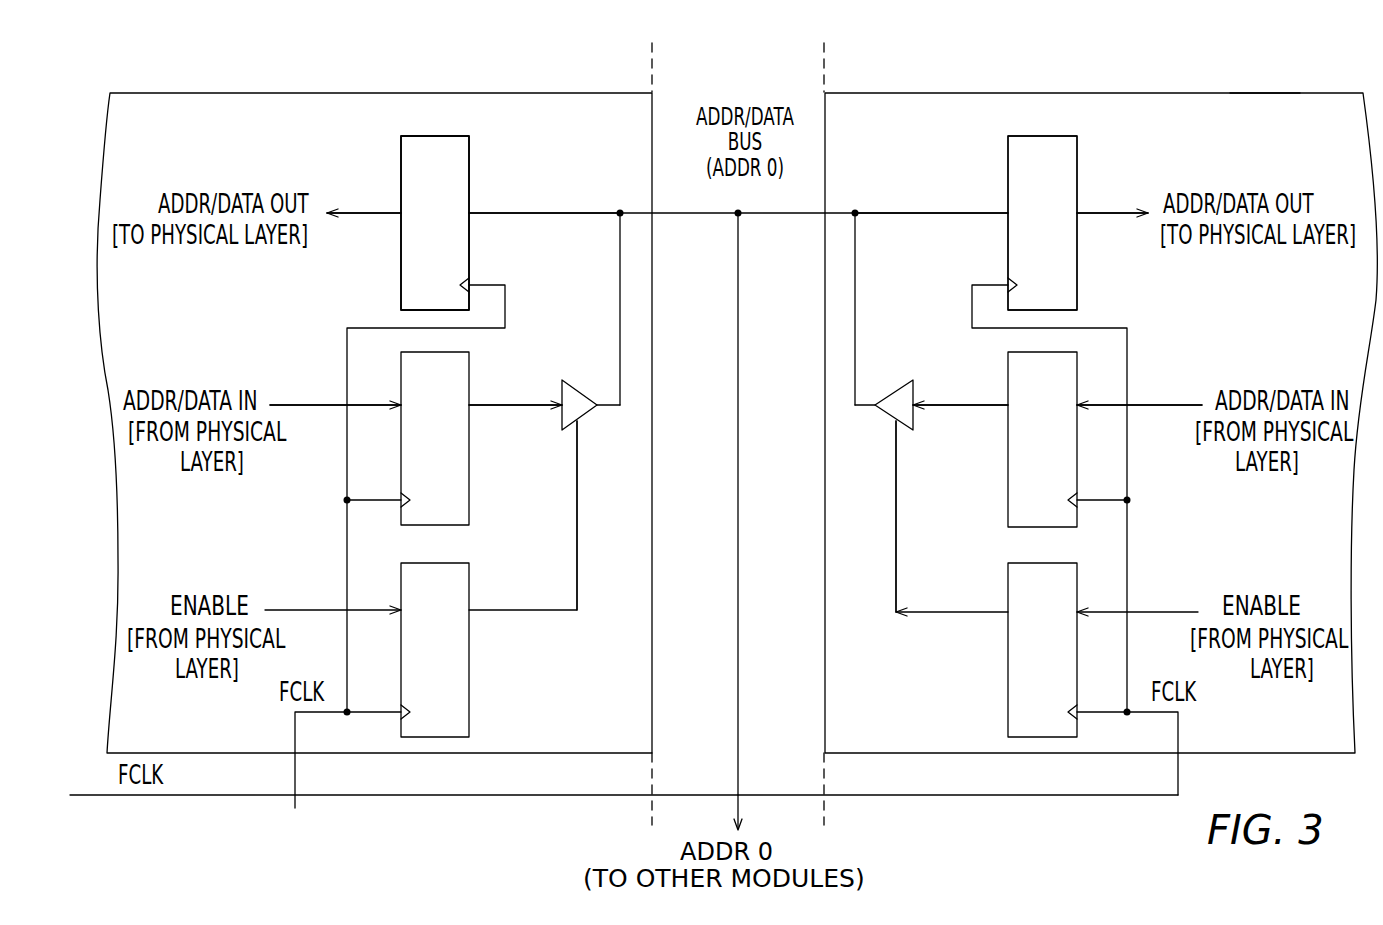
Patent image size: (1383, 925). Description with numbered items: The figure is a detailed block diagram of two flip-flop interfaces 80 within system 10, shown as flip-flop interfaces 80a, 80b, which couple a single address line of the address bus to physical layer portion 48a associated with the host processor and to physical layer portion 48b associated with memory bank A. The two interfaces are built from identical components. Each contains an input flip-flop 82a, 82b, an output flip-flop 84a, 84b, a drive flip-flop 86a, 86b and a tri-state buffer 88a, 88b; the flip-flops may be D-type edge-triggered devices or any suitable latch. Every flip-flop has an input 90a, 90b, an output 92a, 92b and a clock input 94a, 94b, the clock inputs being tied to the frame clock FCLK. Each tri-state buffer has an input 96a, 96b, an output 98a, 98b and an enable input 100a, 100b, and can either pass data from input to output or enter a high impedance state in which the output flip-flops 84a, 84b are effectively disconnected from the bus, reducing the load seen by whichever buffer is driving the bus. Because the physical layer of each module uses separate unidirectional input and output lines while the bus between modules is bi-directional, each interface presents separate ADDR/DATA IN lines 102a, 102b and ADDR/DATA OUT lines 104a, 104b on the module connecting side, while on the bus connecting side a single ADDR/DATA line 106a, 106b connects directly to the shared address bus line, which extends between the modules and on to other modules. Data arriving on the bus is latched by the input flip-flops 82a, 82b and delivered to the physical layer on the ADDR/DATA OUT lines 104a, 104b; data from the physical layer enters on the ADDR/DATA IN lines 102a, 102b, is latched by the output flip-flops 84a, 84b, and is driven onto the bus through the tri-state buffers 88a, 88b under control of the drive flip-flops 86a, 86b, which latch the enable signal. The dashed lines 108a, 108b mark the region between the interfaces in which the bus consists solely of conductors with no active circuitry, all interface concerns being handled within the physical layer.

The system 10 is at (1290, 62).
The physical layer portion 48a is at (598, 92).
The physical layer portion 48b is at (1205, 92).
The flip-flop interface 80 is at (387, 171).
The flip-flop interface 80a is at (479, 211).
The flip-flop interface 80b is at (1021, 179).
The input flip-flop 82a is at (406, 255).
The input flip-flop 82b is at (1014, 255).
The output flip-flop 84a is at (406, 455).
The output flip-flop 84b is at (1014, 455).
The drive flip-flop 86a is at (406, 673).
The drive flip-flop 86b is at (1014, 673).
The tri-state buffer 88a is at (587, 392).
The tri-state buffer 88b is at (893, 376).
The input 90a is at (469, 213).
The input 90b is at (1008, 213).
The output 92a is at (401, 212).
The output 92b is at (1078, 215).
The clock input 94a is at (472, 283).
The clock input 94b is at (1005, 284).
The input 96a is at (562, 412).
The input 96b is at (913, 410).
The output 98a is at (598, 405).
The output 98b is at (899, 428).
The enable input 100a is at (579, 422).
The enable input 100b is at (877, 413).
The ADDR/DATA IN line 102a is at (330, 405).
The ADDR/DATA IN line 102b is at (1150, 405).
The ADDR/DATA OUT line 104a is at (367, 215).
The ADDR/DATA OUT line 104b is at (1098, 213).
The ADDR/DATA line 106a is at (637, 213).
The ADDR/DATA line 106b is at (838, 213).
The dashed line 108a is at (648, 813).
The dashed line 108b is at (824, 810).